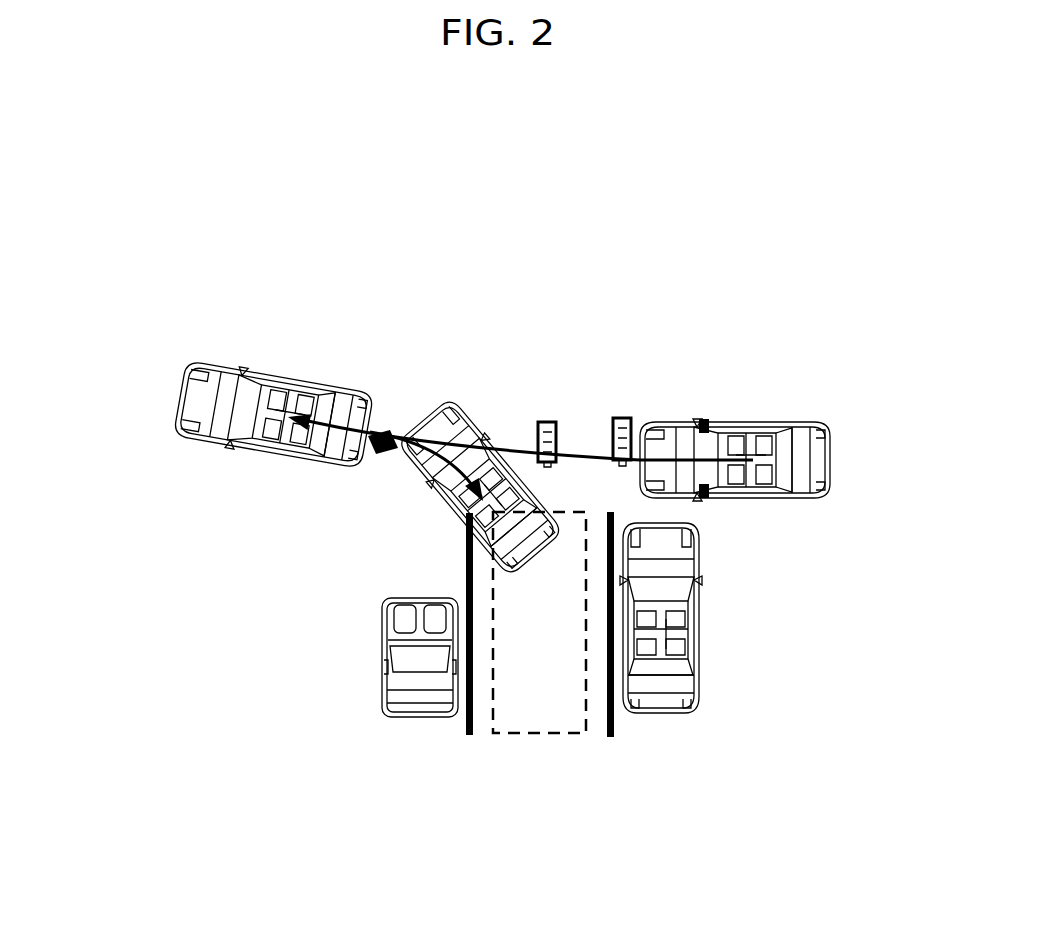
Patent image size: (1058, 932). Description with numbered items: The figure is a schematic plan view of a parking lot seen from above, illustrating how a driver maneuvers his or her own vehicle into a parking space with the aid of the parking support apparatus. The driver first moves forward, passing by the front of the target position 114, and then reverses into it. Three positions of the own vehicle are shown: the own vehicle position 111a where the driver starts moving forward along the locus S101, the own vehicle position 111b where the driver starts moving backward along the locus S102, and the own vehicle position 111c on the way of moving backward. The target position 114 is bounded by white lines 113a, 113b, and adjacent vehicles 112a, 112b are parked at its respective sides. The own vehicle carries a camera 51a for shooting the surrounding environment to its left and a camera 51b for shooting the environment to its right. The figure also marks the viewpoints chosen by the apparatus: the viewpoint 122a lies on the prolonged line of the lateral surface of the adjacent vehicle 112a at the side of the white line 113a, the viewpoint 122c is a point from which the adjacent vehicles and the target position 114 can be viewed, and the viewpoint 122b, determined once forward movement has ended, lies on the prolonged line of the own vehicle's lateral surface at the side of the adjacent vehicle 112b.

The own vehicle position 111a is at (830, 452).
The own vehicle position 111b is at (177, 420).
The own vehicle position 111c is at (440, 420).
The adjacent vehicle 112a is at (694, 698).
The adjacent vehicle 112b is at (388, 708).
The white line 113a is at (609, 737).
The white line 113b is at (468, 737).
The target position 114 is at (545, 733).
The viewpoint 122a is at (626, 420).
The viewpoint 122b is at (383, 430).
The viewpoint 122c is at (540, 420).
The camera 51a is at (706, 494).
The camera 51b is at (706, 420).
The locus S101 is at (587, 456).
The locus S102 is at (430, 462).